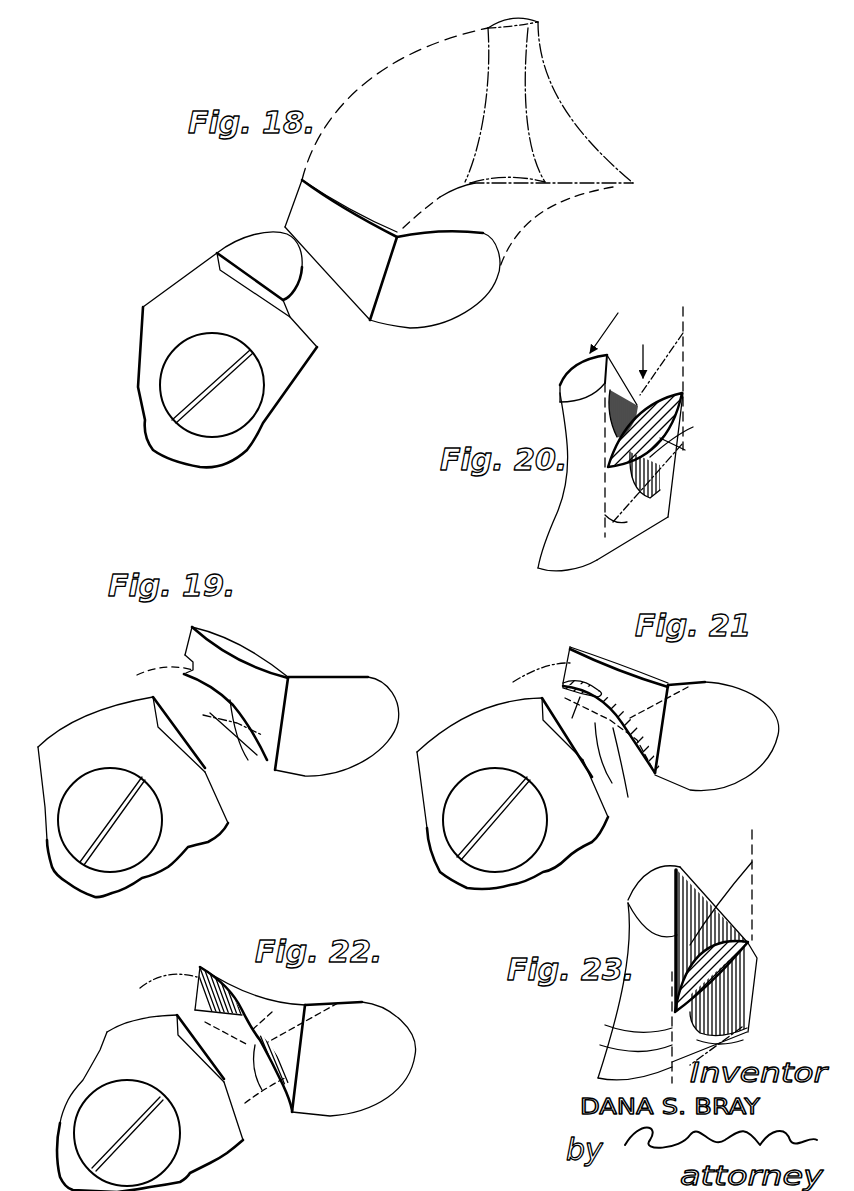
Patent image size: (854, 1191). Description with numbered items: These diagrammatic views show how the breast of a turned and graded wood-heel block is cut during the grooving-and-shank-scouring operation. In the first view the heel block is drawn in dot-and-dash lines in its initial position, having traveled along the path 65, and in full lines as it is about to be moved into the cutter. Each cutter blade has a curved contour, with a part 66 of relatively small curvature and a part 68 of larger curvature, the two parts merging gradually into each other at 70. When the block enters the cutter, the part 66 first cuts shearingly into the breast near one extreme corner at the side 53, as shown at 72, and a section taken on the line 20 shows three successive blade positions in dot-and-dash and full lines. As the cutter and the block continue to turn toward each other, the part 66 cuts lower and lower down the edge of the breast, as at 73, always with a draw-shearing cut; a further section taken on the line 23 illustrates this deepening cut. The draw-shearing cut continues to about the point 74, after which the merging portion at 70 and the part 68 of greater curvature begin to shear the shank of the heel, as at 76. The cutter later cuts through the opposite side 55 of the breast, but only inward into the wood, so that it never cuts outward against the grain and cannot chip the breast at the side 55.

In FIG. 18, the side of the breast 53 is at (340, 275).
In FIG. 18, the other side of the breast 55 is at (358, 218).
In FIG. 20, the other side of the breast 55 is at (662, 438).
In FIG. 19, the other side of the breast 55 is at (253, 665).
In FIG. 21, the other side of the breast 55 is at (592, 680).
In FIG. 22, the other side of the breast 55 is at (254, 993).
In FIG. 23, the other side of the breast 55 is at (703, 905).
In FIG. 18, the path 65 is at (515, 215).
In FIG. 18, the part of relatively small curvature 66 is at (296, 264).
In FIG. 20, the part of relatively small curvature 66 is at (608, 417).
In FIG. 19, the part of relatively small curvature 66 is at (252, 762).
In FIG. 21, the part of relatively small curvature 66 is at (633, 778).
In FIG. 22, the part of relatively small curvature 66 is at (228, 1065).
In FIG. 23, the part of relatively small curvature 66 is at (637, 930).
In FIG. 18, the part of larger curvature 68 is at (243, 241).
In FIG. 20, the part of larger curvature 68 is at (663, 378).
In FIG. 19, the part of larger curvature 68 is at (197, 688).
In FIG. 21, the part of larger curvature 68 is at (604, 720).
In FIG. 22, the part of larger curvature 68 is at (220, 990).
In FIG. 23, the part of larger curvature 68 is at (750, 875).
In FIG. 18, the merging point of blade parts 70 is at (287, 232).
In FIG. 19, the merging point of blade parts 70 is at (238, 700).
In FIG. 21, the merging point of blade parts 70 is at (630, 687).
In FIG. 22, the merging point of blade parts 70 is at (272, 1012).
In FIG. 20, the initial shearing cut 72 is at (616, 385).
In FIG. 19, the initial shearing cut 72 is at (186, 653).
In FIG. 19, the cut on edge of breast 73 is at (276, 683).
In FIG. 21, the cut on edge of breast 73 is at (688, 687).
In FIG. 22, the cut on edge of breast 73 is at (338, 1003).
In FIG. 23, the cut on edge of breast 73 is at (682, 873).
In FIG. 23, the point 74 is at (622, 1050).
In FIG. 23, the shank shearing cut 76 is at (737, 1038).
In FIG. 19, the section line 20— 20 is at (193, 717).
In FIG. 22, the section line 23— 23 is at (203, 1028).